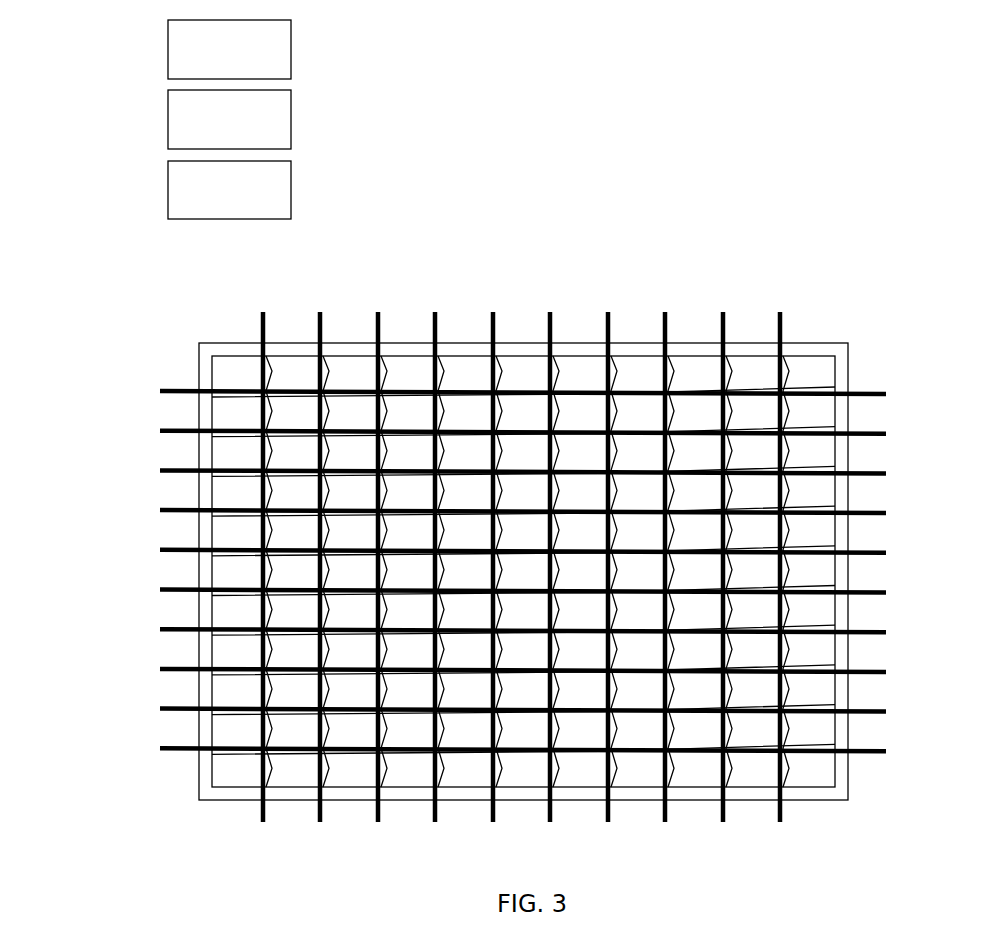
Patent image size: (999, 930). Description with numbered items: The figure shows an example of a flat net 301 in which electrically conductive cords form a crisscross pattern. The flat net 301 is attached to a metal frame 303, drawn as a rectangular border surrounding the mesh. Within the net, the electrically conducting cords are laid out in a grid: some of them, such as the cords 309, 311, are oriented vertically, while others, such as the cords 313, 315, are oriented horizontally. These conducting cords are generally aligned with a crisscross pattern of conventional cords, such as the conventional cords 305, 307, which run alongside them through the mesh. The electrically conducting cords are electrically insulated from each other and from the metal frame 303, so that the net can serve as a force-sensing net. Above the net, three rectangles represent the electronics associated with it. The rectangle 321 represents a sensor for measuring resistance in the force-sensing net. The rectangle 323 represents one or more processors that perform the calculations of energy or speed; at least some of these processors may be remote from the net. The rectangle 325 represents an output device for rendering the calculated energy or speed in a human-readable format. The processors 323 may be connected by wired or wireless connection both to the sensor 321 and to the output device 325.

The flat net 301 is at (829, 308).
The metal frame 303 is at (817, 349).
The conventional cord 305 is at (788, 387).
The conventional cord 307 is at (788, 428).
The electrically conducting cord 309 is at (380, 810).
The electrically conducting cord 311 is at (438, 810).
The electrically conducting cord 313 is at (875, 552).
The electrically conducting cord 315 is at (875, 592).
The sensor 321 is at (167, 50).
The processors 323 is at (167, 122).
The output device 325 is at (167, 192).